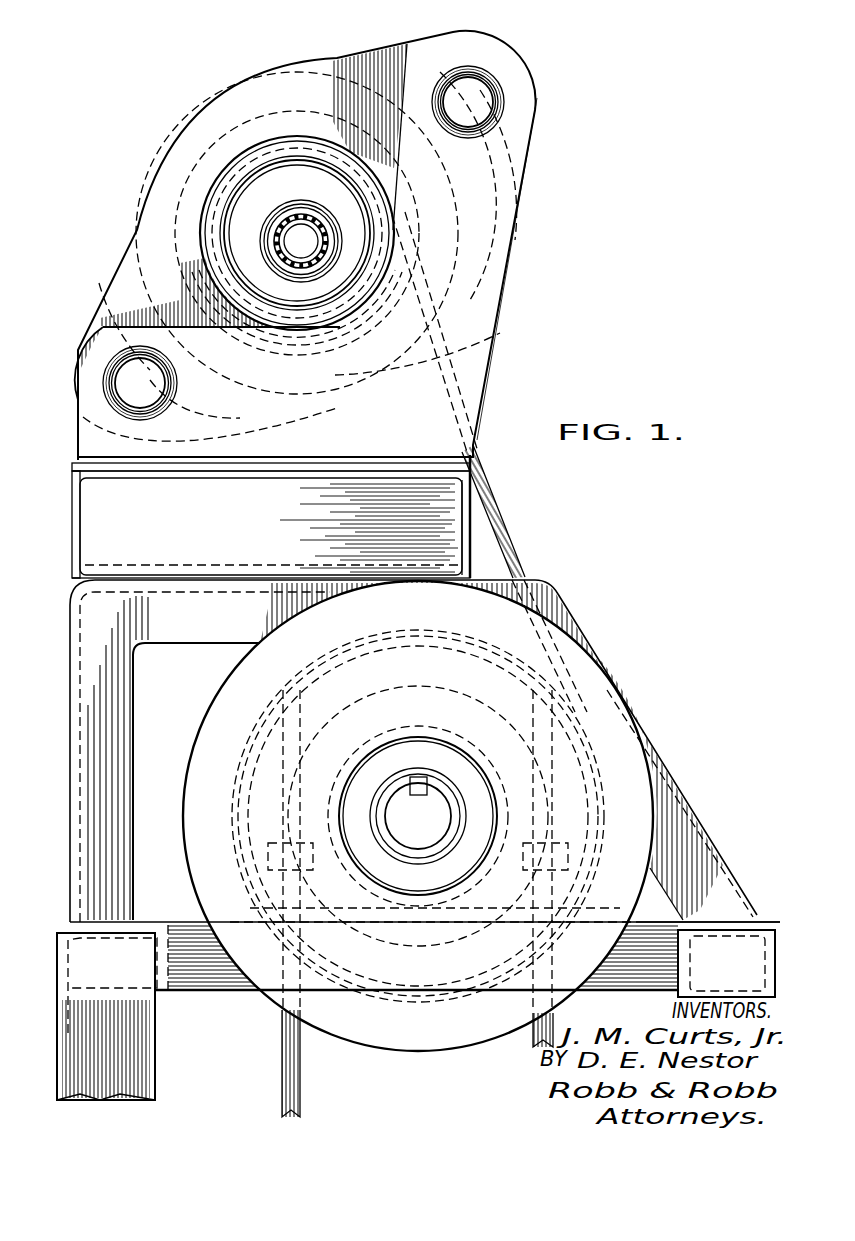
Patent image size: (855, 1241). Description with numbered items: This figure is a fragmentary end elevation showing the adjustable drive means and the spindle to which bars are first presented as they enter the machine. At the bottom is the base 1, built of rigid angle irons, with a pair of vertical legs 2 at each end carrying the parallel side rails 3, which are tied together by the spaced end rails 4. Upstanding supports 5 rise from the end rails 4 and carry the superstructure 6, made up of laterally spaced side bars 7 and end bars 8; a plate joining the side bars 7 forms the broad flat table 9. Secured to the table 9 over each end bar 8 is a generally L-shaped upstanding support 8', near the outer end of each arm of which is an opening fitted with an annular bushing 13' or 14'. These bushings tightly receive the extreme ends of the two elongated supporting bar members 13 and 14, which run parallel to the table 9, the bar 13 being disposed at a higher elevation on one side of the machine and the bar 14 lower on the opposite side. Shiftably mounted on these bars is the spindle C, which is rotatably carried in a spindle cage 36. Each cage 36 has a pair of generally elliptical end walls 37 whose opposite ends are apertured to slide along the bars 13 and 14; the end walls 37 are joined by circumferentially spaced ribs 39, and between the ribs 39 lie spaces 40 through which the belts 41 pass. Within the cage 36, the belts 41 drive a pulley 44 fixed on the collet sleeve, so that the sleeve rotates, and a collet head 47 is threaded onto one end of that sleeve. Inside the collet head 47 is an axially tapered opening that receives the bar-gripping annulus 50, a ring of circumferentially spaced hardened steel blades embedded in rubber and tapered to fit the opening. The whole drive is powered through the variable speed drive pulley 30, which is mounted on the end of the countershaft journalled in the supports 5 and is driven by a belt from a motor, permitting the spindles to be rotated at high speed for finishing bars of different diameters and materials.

The base 1 is at (727, 848).
The vertical legs 2 is at (150, 1046).
The side rails 3 is at (172, 985).
The end rails 4 is at (643, 928).
The upstanding supports 5 is at (662, 800).
The superstructure 6 is at (481, 549).
The side bars 7 is at (78, 532).
The end bars 8 is at (271, 524).
The L-shaped upstanding supports 8' is at (506, 270).
The table 9 is at (270, 470).
The supporting bar member 13 is at (509, 102).
The annular bushing 13' is at (494, 72).
The supporting bar member 14 is at (103, 374).
The annular bushing 14' is at (99, 383).
The variable speed drive pulley 30 is at (622, 715).
The spindle cage 36 is at (355, 51).
The end wall 37 is at (401, 55).
The ribs 39 is at (142, 223).
The spaces 40 is at (262, 378).
The belts 41 is at (486, 482).
The pulley 44 is at (289, 128).
The collet head 47 is at (297, 233).
The annulus 50 is at (301, 241).
The third spindle C is at (236, 86).